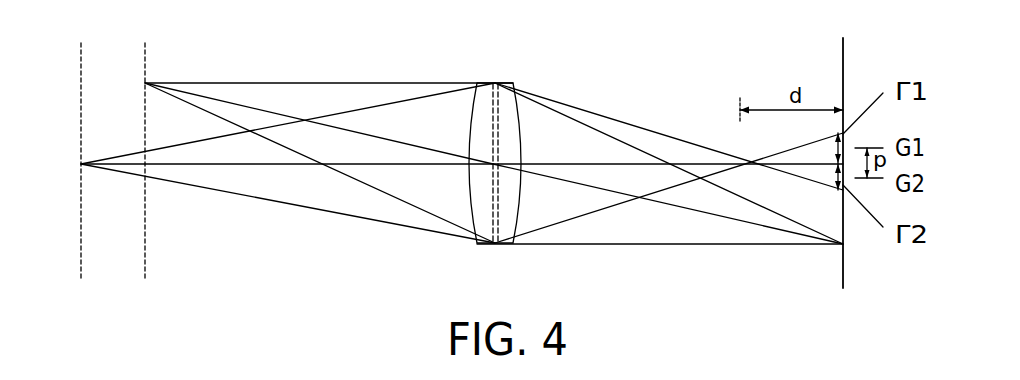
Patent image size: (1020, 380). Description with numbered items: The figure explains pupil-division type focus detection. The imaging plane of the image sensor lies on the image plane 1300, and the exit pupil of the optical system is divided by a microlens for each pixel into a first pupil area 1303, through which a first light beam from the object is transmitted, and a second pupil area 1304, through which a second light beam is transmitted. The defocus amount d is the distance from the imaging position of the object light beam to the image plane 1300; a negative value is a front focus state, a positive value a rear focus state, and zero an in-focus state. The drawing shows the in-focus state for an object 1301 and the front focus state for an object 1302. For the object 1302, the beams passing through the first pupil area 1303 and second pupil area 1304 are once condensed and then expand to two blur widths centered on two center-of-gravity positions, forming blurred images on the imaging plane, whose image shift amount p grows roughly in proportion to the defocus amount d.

The image plane 1300 is at (848, 148).
The object 1301 is at (116, 160).
The object 1302 is at (49, 160).
The first pupil area 1303 is at (498, 128).
The second pupil area 1304 is at (498, 208).